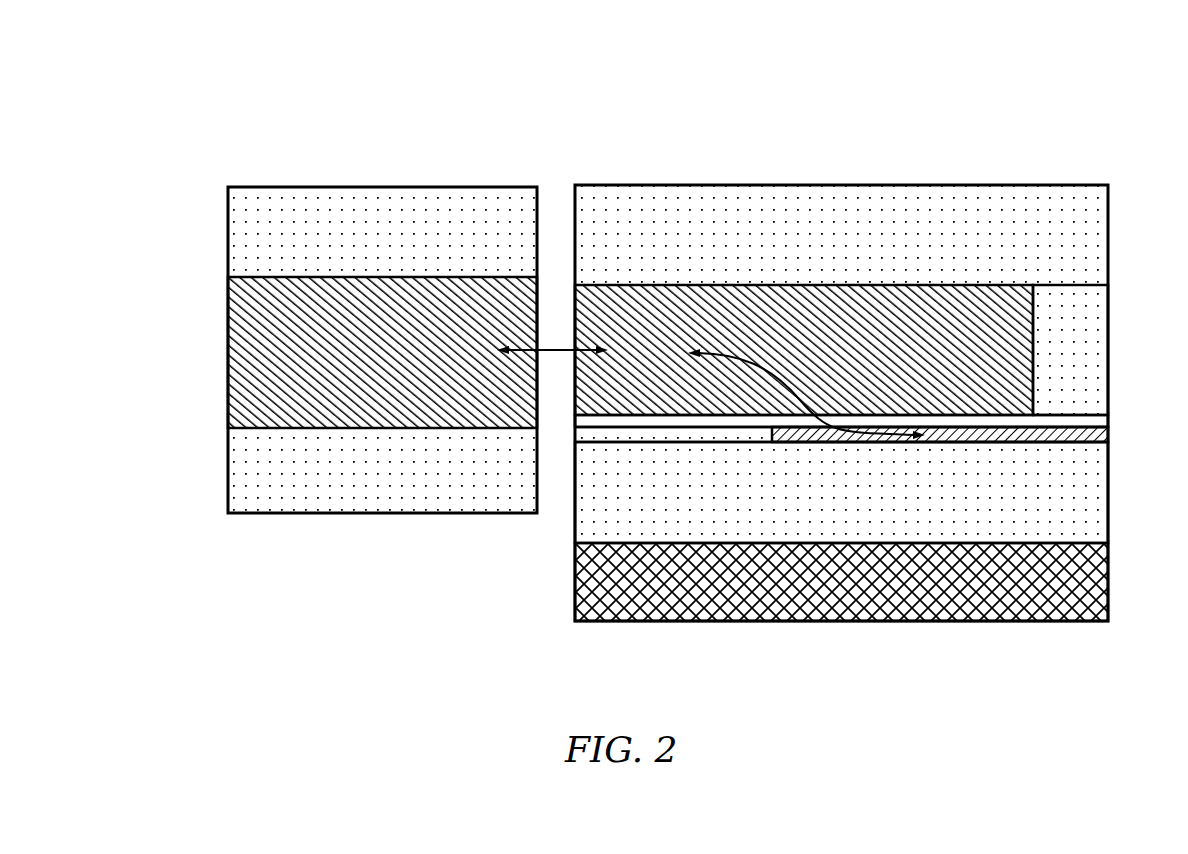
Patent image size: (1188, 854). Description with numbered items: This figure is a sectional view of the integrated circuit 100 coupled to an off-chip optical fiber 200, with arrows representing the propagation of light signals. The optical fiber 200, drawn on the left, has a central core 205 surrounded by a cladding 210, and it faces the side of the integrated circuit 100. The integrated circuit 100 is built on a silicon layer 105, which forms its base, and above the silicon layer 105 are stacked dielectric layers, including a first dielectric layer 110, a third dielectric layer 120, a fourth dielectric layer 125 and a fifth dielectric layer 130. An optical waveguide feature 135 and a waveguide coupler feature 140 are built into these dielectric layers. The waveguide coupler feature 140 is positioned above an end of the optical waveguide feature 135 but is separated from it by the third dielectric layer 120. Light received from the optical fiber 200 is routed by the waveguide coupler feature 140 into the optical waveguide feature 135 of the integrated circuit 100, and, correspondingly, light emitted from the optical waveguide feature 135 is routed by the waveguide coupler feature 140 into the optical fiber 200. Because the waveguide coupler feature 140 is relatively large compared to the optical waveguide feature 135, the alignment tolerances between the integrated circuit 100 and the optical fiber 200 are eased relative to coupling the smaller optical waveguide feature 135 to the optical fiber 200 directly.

The optical fiber 200 is at (398, 103).
The integrated circuit 100 is at (813, 103).
The cladding 210 is at (240, 232).
The core 205 is at (245, 340).
The fifth dielectric layer 130 is at (1093, 227).
The waveguide coupler feature 140 is at (1023, 327).
The fourth dielectric layer 125 is at (1093, 368).
The third dielectric layer 120 is at (1097, 423).
The optical waveguide feature 135 is at (1108, 440).
The first dielectric layer 110 is at (1090, 508).
The silicon layer 105 is at (1095, 600).